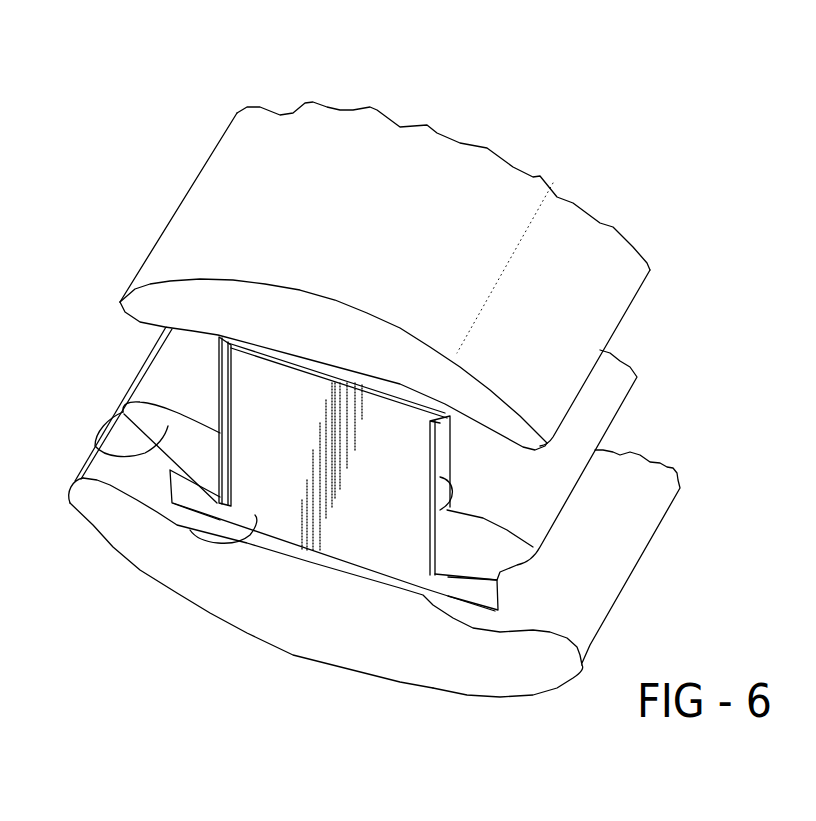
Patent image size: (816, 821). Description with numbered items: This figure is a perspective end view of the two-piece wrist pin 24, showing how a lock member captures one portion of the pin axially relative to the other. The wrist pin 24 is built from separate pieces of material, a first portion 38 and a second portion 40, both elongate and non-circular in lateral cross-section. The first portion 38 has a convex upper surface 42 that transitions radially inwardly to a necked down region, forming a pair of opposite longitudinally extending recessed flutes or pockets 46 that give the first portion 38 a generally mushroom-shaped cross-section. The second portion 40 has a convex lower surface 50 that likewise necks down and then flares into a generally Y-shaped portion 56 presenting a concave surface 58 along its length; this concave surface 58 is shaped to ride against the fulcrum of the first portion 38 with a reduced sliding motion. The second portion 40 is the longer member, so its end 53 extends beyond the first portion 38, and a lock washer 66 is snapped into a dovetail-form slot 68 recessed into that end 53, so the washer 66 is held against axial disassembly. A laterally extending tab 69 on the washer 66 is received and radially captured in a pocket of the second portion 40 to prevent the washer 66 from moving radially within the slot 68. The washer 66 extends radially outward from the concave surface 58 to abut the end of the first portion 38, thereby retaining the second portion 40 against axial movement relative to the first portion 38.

The first portion 38 is at (312, 127).
The wrist pin 24 is at (613, 197).
The upper surface 42 is at (603, 252).
The pockets 46 is at (120, 303).
The concave surface 58 is at (193, 395).
The Y-shaped portion 56 is at (97, 445).
The lock washers 66 is at (407, 396).
The slots 68 is at (448, 472).
The tabs 69 is at (500, 598).
The second portion 40 is at (142, 568).
The end 53 is at (303, 630).
The lower surface 50 is at (467, 697).